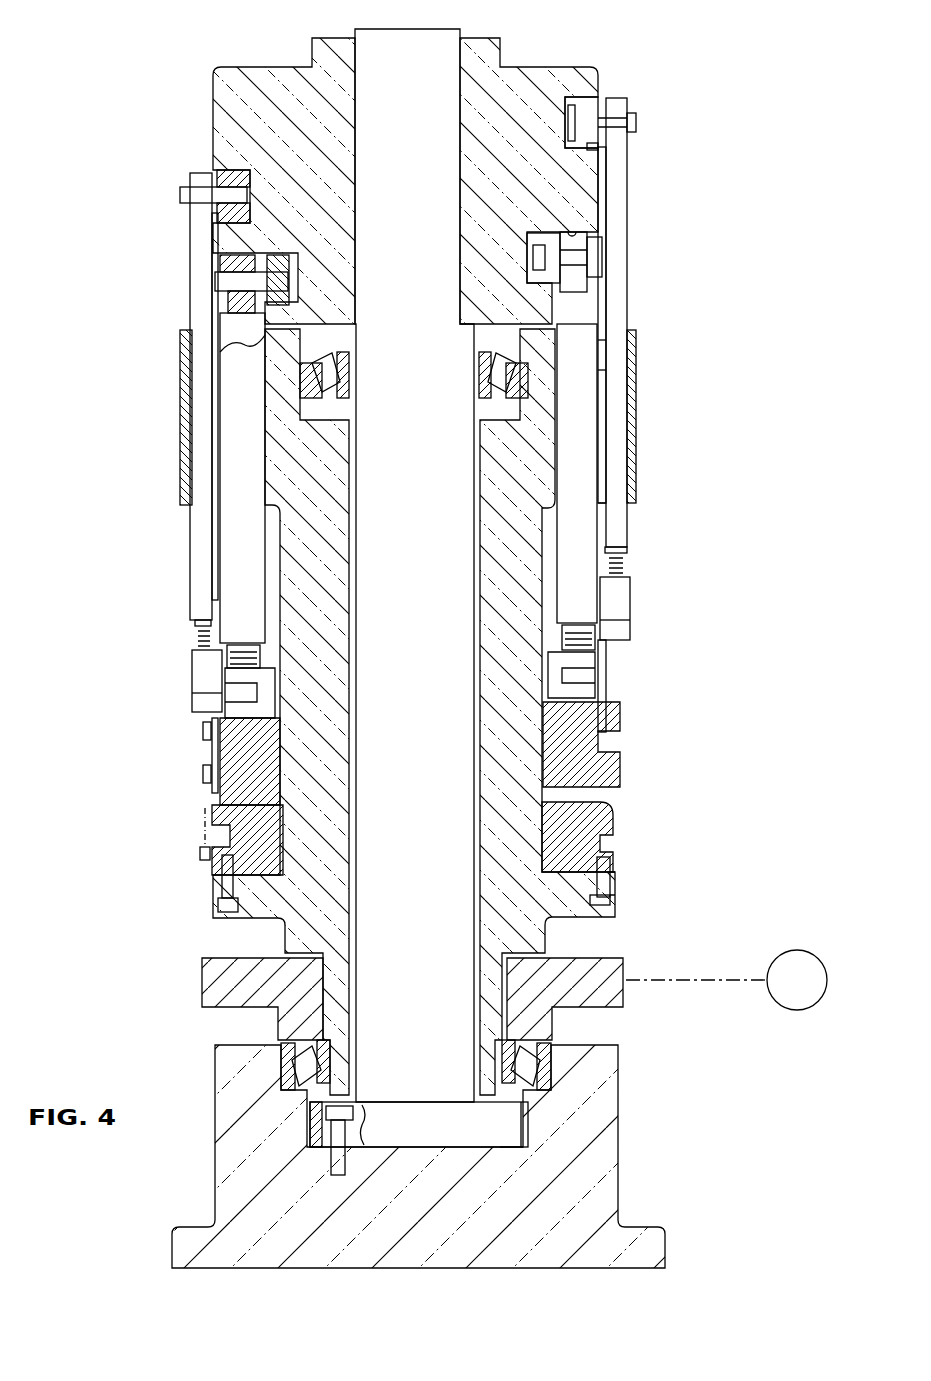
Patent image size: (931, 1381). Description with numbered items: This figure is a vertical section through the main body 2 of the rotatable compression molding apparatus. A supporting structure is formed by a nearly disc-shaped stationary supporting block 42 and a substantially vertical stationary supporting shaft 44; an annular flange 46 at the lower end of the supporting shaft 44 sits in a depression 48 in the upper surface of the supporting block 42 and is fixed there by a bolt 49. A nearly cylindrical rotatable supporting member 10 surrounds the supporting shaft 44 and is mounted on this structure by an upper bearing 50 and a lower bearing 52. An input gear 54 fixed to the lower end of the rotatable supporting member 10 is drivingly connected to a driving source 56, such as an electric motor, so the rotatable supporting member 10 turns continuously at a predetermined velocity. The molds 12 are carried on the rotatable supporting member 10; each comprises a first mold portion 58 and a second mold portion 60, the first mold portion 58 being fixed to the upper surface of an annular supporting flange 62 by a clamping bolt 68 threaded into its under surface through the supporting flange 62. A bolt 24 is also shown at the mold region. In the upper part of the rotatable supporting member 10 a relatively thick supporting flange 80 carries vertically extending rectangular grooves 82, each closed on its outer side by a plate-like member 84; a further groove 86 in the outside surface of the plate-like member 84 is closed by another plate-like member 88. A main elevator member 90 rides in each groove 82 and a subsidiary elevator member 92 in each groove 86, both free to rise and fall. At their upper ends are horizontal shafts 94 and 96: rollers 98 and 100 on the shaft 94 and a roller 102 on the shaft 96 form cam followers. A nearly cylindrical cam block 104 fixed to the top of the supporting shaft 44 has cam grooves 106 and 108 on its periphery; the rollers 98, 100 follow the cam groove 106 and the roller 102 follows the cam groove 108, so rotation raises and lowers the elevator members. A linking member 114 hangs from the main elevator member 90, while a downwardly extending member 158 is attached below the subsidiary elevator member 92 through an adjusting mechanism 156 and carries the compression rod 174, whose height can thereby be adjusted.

The main body 2 is at (700, 334).
The rotatable supporting member 10 is at (477, 545).
The molds 12 is at (679, 749).
The bolt 24 is at (197, 849).
The stationary supporting block 42 is at (619, 1139).
The stationary supporting shaft 44 is at (397, 634).
The annular flange 46 is at (507, 1144).
The depression 48 is at (482, 1143).
The bolt 49 is at (340, 1106).
The upper bearing 50 is at (474, 387).
The lower bearing 52 is at (308, 1060).
The input gear 54 is at (626, 968).
The driving source 56 is at (784, 992).
The first mold portion 58 is at (619, 814).
The second mold portion 60 is at (623, 718).
The annular supporting flange 62 is at (614, 889).
The clamping bolt 68 is at (599, 906).
The supporting flange 80 is at (548, 393).
The grooves 82 is at (556, 427).
The plate-like members 84 is at (608, 352).
The groove 86 is at (608, 377).
The plate-like member 88 is at (637, 470).
The main elevator member 90 is at (227, 479).
The subsidiary elevator member 92 is at (187, 537).
The shaft 94 is at (216, 279).
The shaft 96 is at (181, 196).
The roller 98 is at (273, 257).
The roller 100 is at (236, 257).
The roller 102 is at (231, 170).
The cam block 104 is at (553, 65).
The cam groove 106 is at (576, 232).
The cam groove 108 is at (599, 148).
The linking member 114 is at (601, 659).
The adjusting mechanism 156 is at (630, 563).
The downwardly extending member 158 is at (633, 604).
The compression rod 174 is at (611, 677).